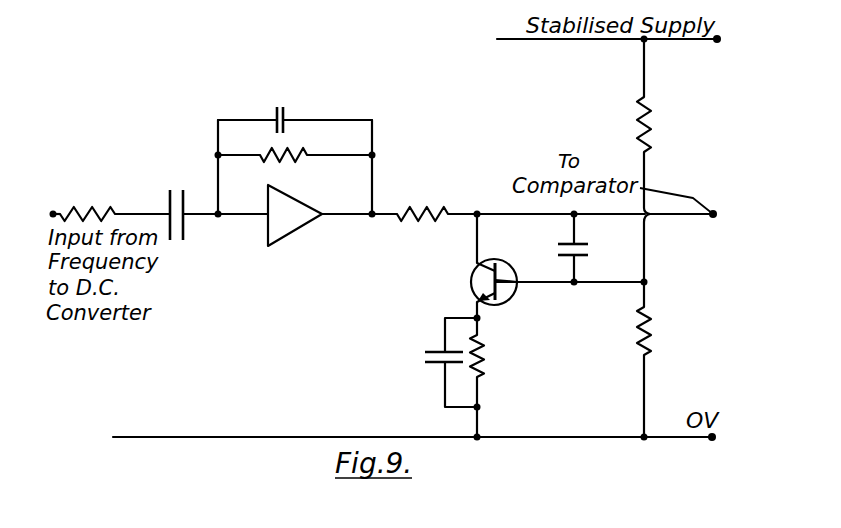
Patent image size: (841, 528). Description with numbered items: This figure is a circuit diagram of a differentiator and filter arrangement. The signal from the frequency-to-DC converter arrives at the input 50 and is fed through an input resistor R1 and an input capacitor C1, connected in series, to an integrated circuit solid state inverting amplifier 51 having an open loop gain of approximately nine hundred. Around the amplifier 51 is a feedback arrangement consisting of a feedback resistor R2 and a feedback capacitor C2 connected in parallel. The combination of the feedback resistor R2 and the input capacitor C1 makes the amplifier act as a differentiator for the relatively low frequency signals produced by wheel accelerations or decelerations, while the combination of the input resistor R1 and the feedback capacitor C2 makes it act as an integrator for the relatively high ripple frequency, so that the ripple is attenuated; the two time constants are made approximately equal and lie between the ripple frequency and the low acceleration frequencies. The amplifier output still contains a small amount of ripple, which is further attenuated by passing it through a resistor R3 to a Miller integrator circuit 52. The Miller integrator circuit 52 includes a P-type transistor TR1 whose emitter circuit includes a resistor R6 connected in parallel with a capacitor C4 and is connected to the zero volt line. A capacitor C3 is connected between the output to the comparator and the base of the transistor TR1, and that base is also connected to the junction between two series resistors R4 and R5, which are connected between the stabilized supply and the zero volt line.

The input 50 is at (62, 200).
The inverting amplifier 51 is at (308, 212).
The Miller integrator circuit 52 is at (563, 420).
The input resistor R1 is at (87, 203).
The feedback resistor R2 is at (283, 169).
The resistor R3 is at (422, 199).
The series resistor R4 is at (623, 124).
The series resistor R5 is at (624, 331).
The resistor R6 is at (494, 356).
The input capacitor C1 is at (182, 202).
The feedback capacitor C2 is at (287, 108).
The capacitor C3 is at (589, 252).
The capacitor C4 is at (424, 360).
The P-type transistor TR1 is at (515, 289).